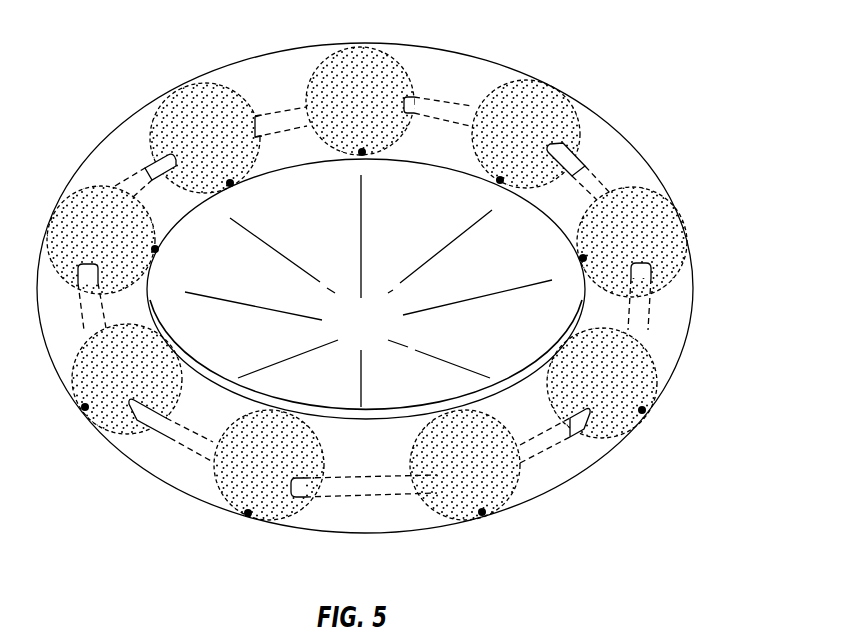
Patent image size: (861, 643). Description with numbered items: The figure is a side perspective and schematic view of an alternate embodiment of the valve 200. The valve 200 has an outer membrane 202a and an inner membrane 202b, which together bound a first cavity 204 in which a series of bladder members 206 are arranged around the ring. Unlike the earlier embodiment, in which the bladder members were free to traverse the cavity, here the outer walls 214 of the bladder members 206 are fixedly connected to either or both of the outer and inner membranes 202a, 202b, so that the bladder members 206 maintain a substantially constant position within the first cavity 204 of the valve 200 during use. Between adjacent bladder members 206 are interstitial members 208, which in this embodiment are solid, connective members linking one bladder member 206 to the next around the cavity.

The valve 200 is at (680, 180).
The outer membrane 202a is at (498, 63).
The inner membrane 202b is at (547, 157).
The first cavity 204 is at (122, 160).
The bladder members 206 is at (312, 55).
The interstitial members 208 is at (675, 310).
The outer walls 214 is at (397, 46).